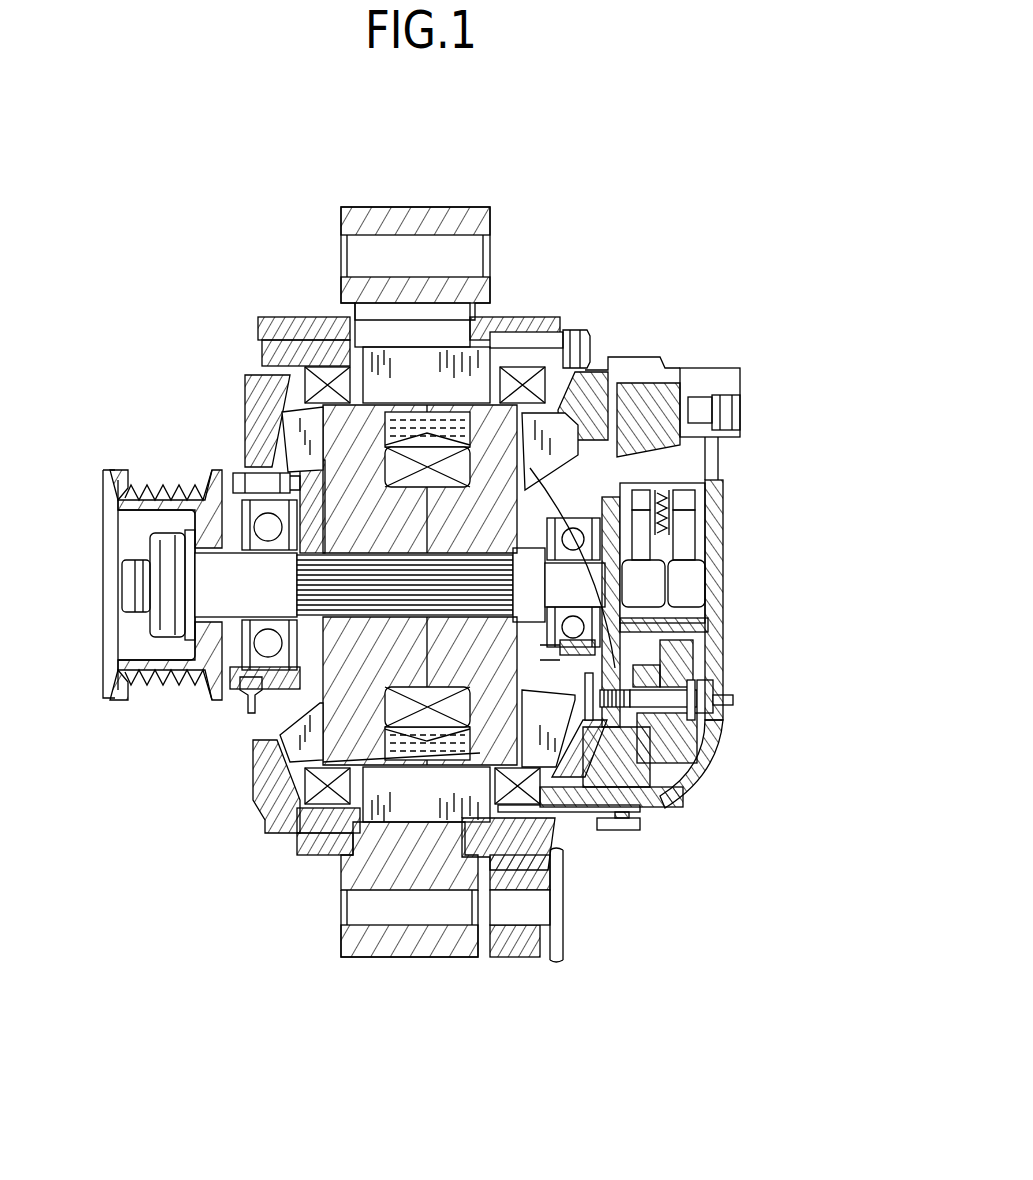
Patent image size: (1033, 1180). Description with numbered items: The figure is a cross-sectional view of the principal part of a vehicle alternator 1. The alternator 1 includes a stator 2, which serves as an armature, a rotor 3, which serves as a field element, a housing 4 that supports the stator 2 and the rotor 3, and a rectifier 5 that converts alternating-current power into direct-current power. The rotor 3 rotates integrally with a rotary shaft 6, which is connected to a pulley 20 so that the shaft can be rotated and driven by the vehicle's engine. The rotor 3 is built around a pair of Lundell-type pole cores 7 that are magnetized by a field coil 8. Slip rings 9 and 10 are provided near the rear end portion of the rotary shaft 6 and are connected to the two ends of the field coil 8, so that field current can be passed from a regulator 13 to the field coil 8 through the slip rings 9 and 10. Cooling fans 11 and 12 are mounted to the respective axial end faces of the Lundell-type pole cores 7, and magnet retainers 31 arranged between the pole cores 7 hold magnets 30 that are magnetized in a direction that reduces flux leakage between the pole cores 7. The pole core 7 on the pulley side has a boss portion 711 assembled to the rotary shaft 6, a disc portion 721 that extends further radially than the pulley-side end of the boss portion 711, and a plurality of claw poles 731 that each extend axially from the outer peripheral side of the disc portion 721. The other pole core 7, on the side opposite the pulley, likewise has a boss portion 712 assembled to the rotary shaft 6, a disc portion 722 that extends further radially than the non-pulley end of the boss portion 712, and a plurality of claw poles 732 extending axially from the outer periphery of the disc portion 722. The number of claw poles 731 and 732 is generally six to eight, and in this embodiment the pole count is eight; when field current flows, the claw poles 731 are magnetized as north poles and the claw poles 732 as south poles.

The vehicle alternator 1 is at (590, 155).
The stator 2 is at (492, 347).
The rotor 3 is at (300, 393).
The housing 4 is at (597, 368).
The rectifier 5 is at (715, 757).
The rotary shaft 6 is at (223, 600).
The Lundell-type pole cores 7 is at (362, 733).
The field coil 8 is at (425, 713).
The slip ring 9 is at (648, 573).
The slip ring 10 is at (690, 597).
The cooling fan 11 is at (290, 742).
The cooling fan 12 is at (643, 818).
The regulator 13 is at (688, 392).
The pulley 20 is at (106, 663).
The magnet 30 is at (367, 551).
The magnet retainer 31 is at (407, 422).
The boss portion 711 is at (400, 530).
The boss portion 712 is at (700, 643).
The disc portion 721 is at (353, 438).
The disc portion 722 is at (688, 805).
The claw poles 731 is at (380, 408).
The claw poles 732 is at (463, 743).